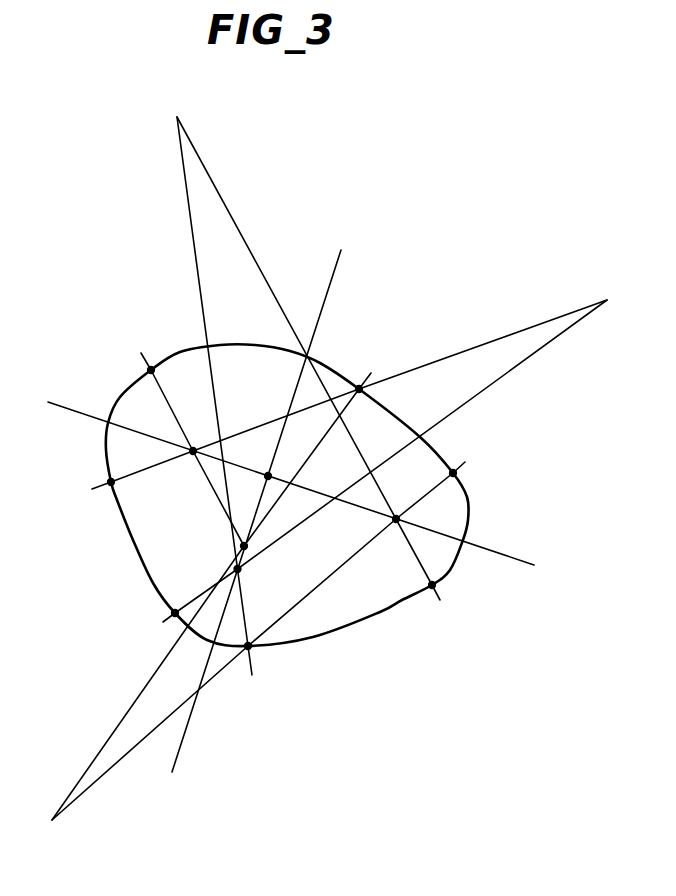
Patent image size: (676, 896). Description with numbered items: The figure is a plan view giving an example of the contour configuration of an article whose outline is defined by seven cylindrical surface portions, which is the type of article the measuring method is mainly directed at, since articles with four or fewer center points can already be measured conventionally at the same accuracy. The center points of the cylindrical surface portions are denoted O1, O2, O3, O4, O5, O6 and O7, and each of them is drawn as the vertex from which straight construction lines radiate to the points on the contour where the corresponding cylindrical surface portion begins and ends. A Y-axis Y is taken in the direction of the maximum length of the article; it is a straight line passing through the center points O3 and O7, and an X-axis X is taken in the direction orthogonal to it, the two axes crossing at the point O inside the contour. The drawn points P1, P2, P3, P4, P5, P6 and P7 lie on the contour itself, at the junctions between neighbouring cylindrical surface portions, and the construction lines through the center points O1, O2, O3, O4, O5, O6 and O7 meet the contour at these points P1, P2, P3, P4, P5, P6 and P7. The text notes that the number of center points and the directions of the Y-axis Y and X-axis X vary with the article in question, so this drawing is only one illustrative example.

The X-axis X is at (262, 497).
The Y-axis Y is at (303, 492).
The origin / center point O is at (262, 463).
The center point of cylindrical surface portion O1 is at (245, 528).
The center point of cylindrical surface portion O2 is at (246, 611).
The center point of cylindrical surface portion O3 is at (400, 505).
The center point of cylindrical surface portion O4 is at (296, 382).
The center point of cylindrical surface portion O5 is at (252, 577).
The center point of cylindrical surface portion O6 is at (366, 454).
The center point of cylindrical surface portion O7 is at (200, 439).
The point P1 on curve P1 is at (356, 372).
The point P2 on curve P2 is at (470, 477).
The point P3 on curve P3 is at (449, 587).
The point P4 on curve P4 is at (263, 660).
The point P5 on curve P5 is at (160, 612).
The point P6 on curve P6 is at (97, 474).
The point P7 on curve P7 is at (192, 443).